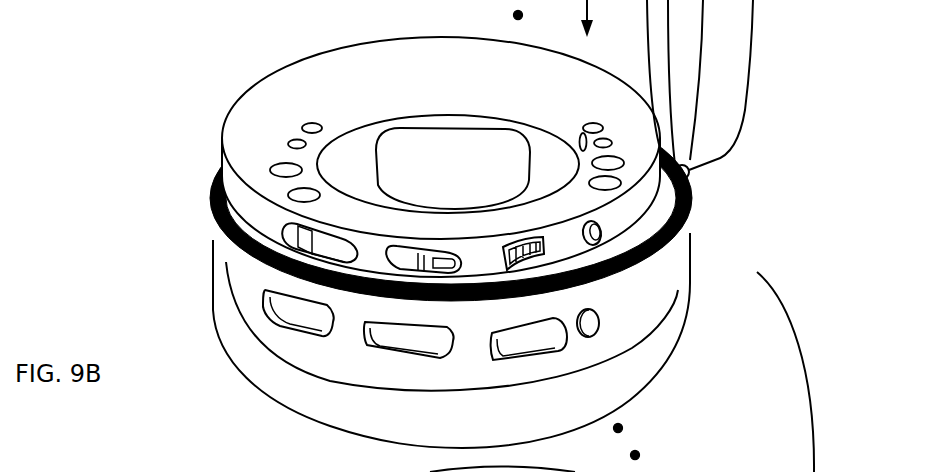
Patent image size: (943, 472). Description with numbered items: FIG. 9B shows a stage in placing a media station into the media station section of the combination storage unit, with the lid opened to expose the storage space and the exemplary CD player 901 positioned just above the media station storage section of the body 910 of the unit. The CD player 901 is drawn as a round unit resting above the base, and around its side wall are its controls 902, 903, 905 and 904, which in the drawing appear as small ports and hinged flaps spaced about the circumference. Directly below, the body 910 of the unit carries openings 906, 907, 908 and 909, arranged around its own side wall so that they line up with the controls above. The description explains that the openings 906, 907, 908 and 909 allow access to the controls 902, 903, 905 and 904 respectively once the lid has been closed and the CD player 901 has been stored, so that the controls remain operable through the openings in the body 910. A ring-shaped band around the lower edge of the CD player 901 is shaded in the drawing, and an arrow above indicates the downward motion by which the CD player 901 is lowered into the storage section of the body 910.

The CD player 901 is at (262, 102).
The control 902 is at (288, 228).
The control 903 is at (397, 254).
The control 904 is at (600, 243).
The control 905 is at (560, 257).
The opening 906 is at (293, 313).
The opening 907 is at (403, 335).
The opening 908 is at (542, 348).
The opening 909 is at (583, 327).
The body 910 is at (217, 240).